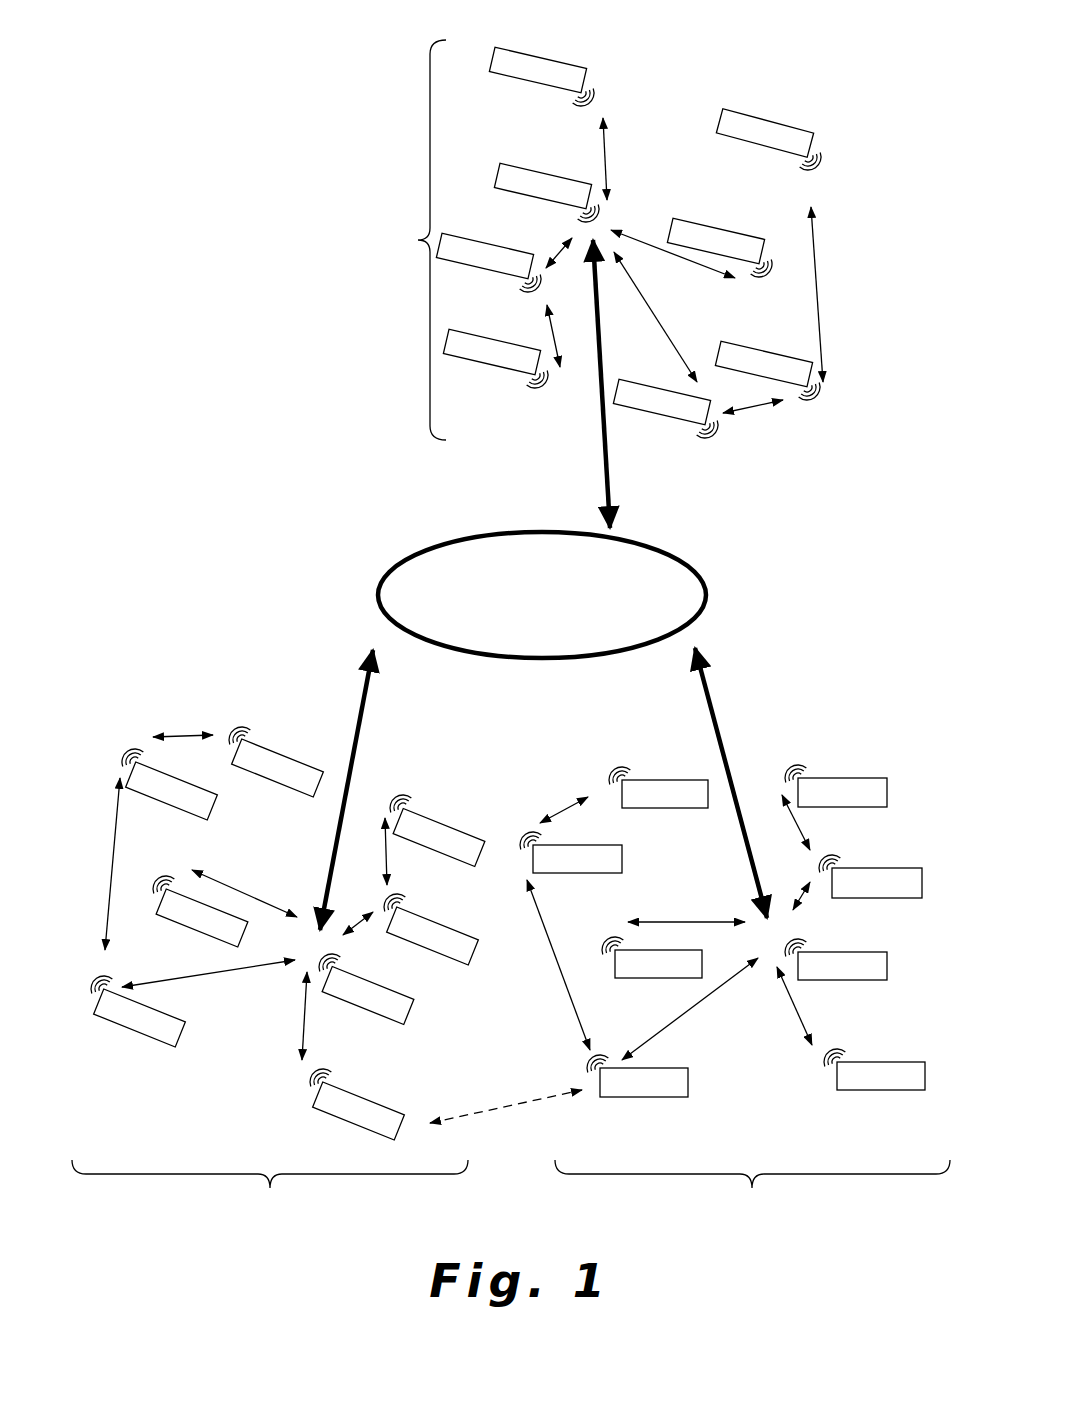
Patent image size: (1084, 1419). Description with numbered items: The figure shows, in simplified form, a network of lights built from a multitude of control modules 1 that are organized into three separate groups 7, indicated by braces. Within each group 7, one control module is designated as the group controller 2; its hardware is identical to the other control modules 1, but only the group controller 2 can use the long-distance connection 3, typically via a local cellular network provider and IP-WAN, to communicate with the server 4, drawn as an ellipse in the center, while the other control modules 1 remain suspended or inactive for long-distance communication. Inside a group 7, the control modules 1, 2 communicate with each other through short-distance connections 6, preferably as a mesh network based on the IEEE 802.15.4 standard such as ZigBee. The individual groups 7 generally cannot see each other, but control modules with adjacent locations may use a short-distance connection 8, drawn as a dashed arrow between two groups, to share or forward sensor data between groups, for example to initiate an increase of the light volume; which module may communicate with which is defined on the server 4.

The control module 1 is at (558, 75).
The group controller 2 is at (555, 190).
The long-distance connection 3 is at (365, 712).
The server 4 is at (532, 609).
The short-distance connection 6 is at (110, 848).
The group 7 is at (511, 631).
The short-distance connection between groups 8 is at (505, 1105).